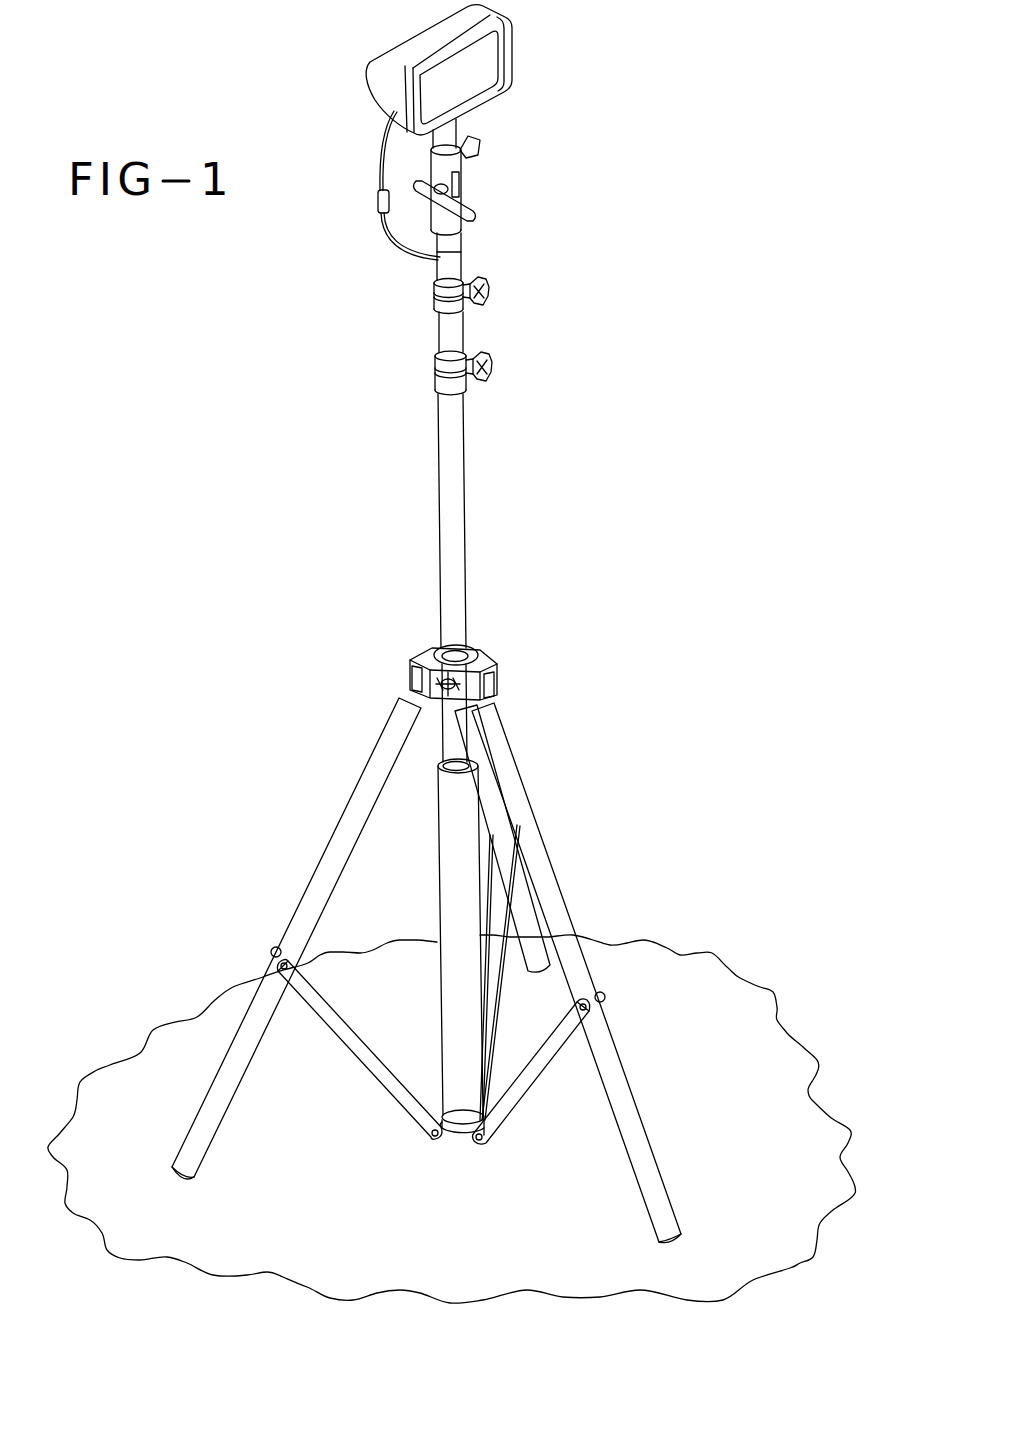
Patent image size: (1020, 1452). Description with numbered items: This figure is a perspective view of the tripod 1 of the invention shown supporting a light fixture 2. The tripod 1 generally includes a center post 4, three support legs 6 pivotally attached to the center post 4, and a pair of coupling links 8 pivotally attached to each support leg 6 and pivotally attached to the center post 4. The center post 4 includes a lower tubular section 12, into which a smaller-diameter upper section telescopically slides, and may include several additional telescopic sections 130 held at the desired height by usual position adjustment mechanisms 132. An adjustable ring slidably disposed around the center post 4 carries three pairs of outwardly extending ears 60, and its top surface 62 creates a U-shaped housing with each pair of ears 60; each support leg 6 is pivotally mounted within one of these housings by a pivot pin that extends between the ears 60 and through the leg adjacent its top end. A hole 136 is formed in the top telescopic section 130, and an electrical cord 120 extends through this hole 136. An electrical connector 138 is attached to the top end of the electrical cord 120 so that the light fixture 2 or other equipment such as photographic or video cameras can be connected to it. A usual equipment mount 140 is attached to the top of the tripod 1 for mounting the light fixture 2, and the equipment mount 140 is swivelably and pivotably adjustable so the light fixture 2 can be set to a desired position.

The tripod 1 is at (598, 464).
The light fixture 2 is at (394, 49).
The center post 4 is at (468, 549).
The support legs 6 is at (346, 801).
The coupling links 8 is at (519, 871).
The lower tubular section 12 is at (452, 888).
The ears 60 is at (414, 651).
The top surface 62 is at (428, 650).
The electrical cord 120 is at (395, 245).
The telescopic sections 130 is at (440, 272).
The position adjustment mechanisms 132 is at (488, 280).
The hole 136 is at (440, 257).
The electrical connector 138 is at (378, 205).
The equipment mount 140 is at (466, 174).